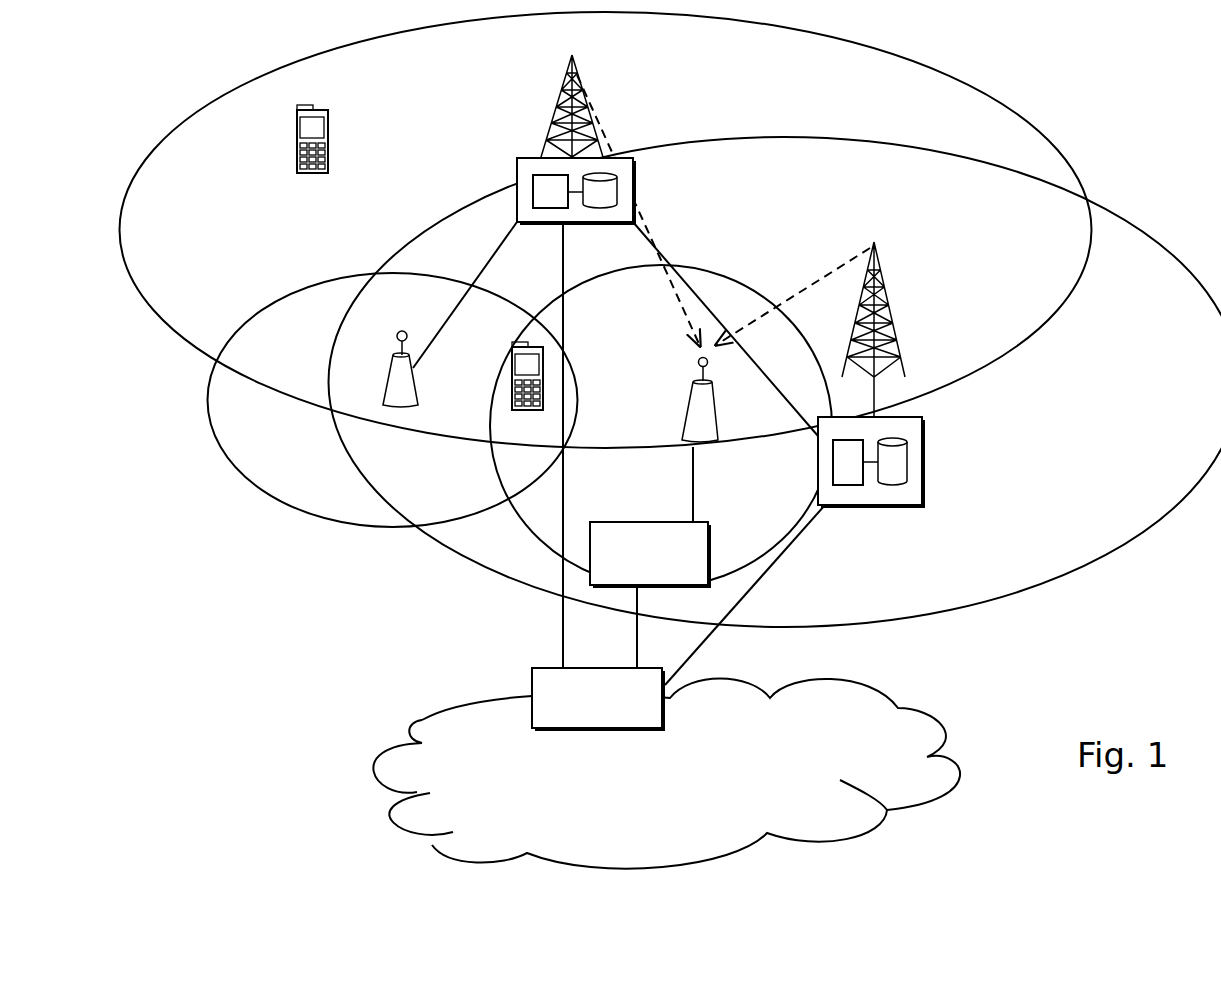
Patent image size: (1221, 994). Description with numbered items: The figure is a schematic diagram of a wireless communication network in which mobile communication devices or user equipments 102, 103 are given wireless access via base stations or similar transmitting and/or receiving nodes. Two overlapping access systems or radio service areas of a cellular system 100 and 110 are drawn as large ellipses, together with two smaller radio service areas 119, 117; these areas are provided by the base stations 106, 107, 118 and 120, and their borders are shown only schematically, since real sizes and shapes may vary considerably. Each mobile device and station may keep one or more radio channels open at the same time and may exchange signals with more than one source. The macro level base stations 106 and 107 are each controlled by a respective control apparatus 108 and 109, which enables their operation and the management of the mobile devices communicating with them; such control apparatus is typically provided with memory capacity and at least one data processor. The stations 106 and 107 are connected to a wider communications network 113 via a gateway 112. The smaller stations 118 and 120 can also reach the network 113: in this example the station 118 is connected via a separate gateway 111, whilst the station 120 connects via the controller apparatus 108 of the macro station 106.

The radio service area 100 is at (197, 103).
The mobile communication device 102 is at (292, 158).
The mobile communication device 103 is at (507, 412).
The base station 106 is at (562, 120).
The base station 107 is at (897, 330).
The control apparatus 108 is at (517, 178).
The control apparatus 109 is at (910, 492).
The radio service area 110 is at (1143, 532).
The gateway 111 is at (598, 562).
The gateway 112 is at (532, 668).
The communications network 113 is at (453, 740).
The radio service area 117 is at (742, 283).
The station 118 is at (703, 420).
The radio service area 119 is at (290, 510).
The station 120 is at (390, 372).